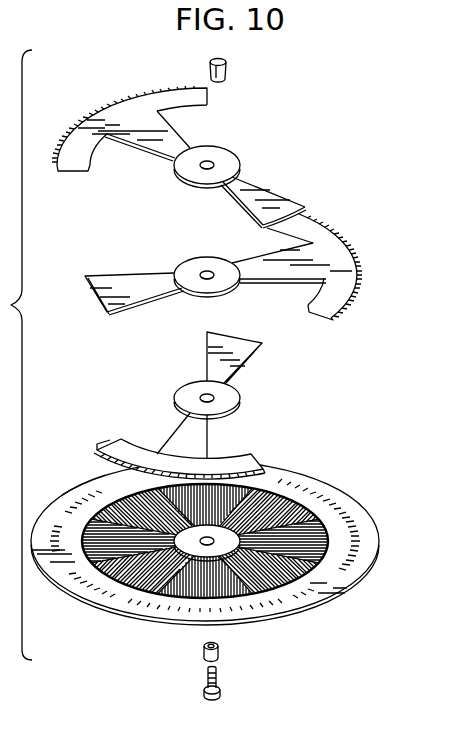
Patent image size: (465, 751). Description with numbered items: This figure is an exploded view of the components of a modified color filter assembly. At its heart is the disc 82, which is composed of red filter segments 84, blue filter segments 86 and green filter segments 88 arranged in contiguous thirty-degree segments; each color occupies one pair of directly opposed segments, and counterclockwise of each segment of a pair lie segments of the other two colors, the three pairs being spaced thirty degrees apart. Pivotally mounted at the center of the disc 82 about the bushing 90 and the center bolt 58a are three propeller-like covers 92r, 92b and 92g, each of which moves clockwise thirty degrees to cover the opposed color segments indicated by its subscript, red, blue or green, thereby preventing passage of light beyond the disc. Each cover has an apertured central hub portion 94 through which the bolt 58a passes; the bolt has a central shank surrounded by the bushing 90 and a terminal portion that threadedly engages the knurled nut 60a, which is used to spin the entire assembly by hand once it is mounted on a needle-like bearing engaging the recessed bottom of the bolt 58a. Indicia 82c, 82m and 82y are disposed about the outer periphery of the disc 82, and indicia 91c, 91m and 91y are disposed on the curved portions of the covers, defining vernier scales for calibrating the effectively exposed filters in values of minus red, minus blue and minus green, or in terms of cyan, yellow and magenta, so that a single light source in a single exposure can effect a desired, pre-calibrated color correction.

The center bolt 58a is at (222, 700).
The knurled nut 60a is at (228, 61).
The disc 82 is at (378, 522).
The indicia 82c is at (110, 467).
The indicia 82m is at (352, 504).
The indicia 82y is at (163, 622).
The red filter segments 84 is at (200, 503).
The blue filter segments 86 is at (133, 503).
The green filter segments 88 is at (108, 528).
The bushing 90 is at (222, 652).
The indicia 91c is at (117, 102).
The indicia 91m is at (350, 302).
The indicia 91y is at (124, 448).
The propeller-like cover 92r is at (185, 122).
The propeller-like cover 92g is at (340, 223).
The propeller-like cover 92b is at (265, 348).
The apertured central hub portion 94 is at (238, 158).